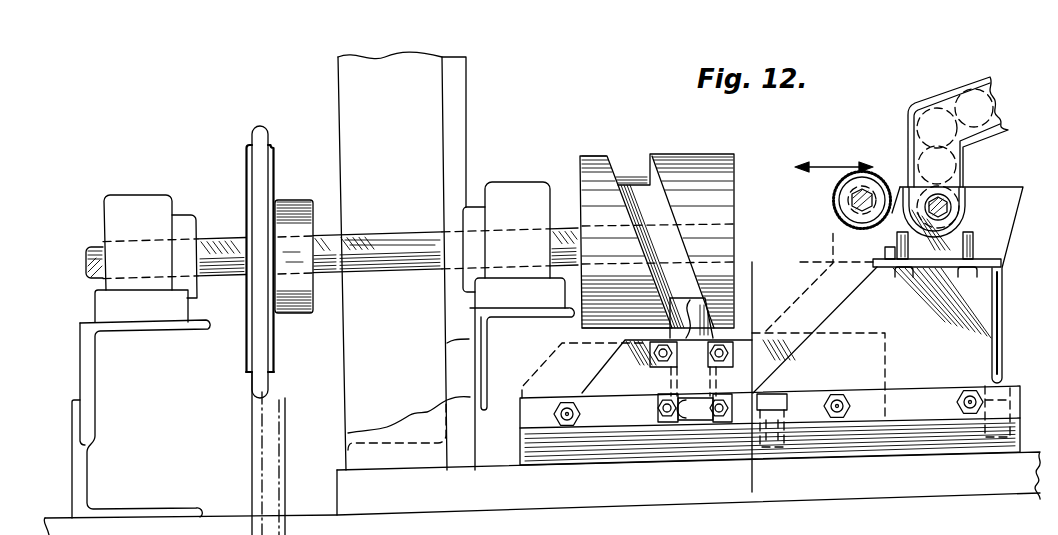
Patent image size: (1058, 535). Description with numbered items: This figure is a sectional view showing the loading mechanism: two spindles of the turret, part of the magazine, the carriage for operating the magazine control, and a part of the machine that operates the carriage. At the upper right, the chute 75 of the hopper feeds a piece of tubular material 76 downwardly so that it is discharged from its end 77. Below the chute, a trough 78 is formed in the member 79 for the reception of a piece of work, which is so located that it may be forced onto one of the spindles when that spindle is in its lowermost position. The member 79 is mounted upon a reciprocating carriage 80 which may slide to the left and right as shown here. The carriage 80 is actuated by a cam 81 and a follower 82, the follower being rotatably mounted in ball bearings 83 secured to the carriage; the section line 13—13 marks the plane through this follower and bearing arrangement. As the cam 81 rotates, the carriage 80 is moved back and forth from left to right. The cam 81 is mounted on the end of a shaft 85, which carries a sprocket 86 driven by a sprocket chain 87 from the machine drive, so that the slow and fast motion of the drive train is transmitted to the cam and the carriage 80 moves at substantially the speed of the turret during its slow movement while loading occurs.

The section line 13— 13 is at (710, 270).
The chute 75 is at (1000, 132).
The piece of tubular material 76 is at (921, 113).
The end of chute 77 is at (912, 186).
The trough 78 is at (960, 201).
The member 79 is at (1002, 252).
The reciprocating carriage 80 is at (1018, 383).
The cam 81 is at (720, 170).
The follower 82 is at (691, 382).
The ball bearings 83 is at (650, 374).
The shaft 85 is at (408, 262).
The sprocket 86 is at (262, 334).
The sprocket chain 87 is at (266, 443).